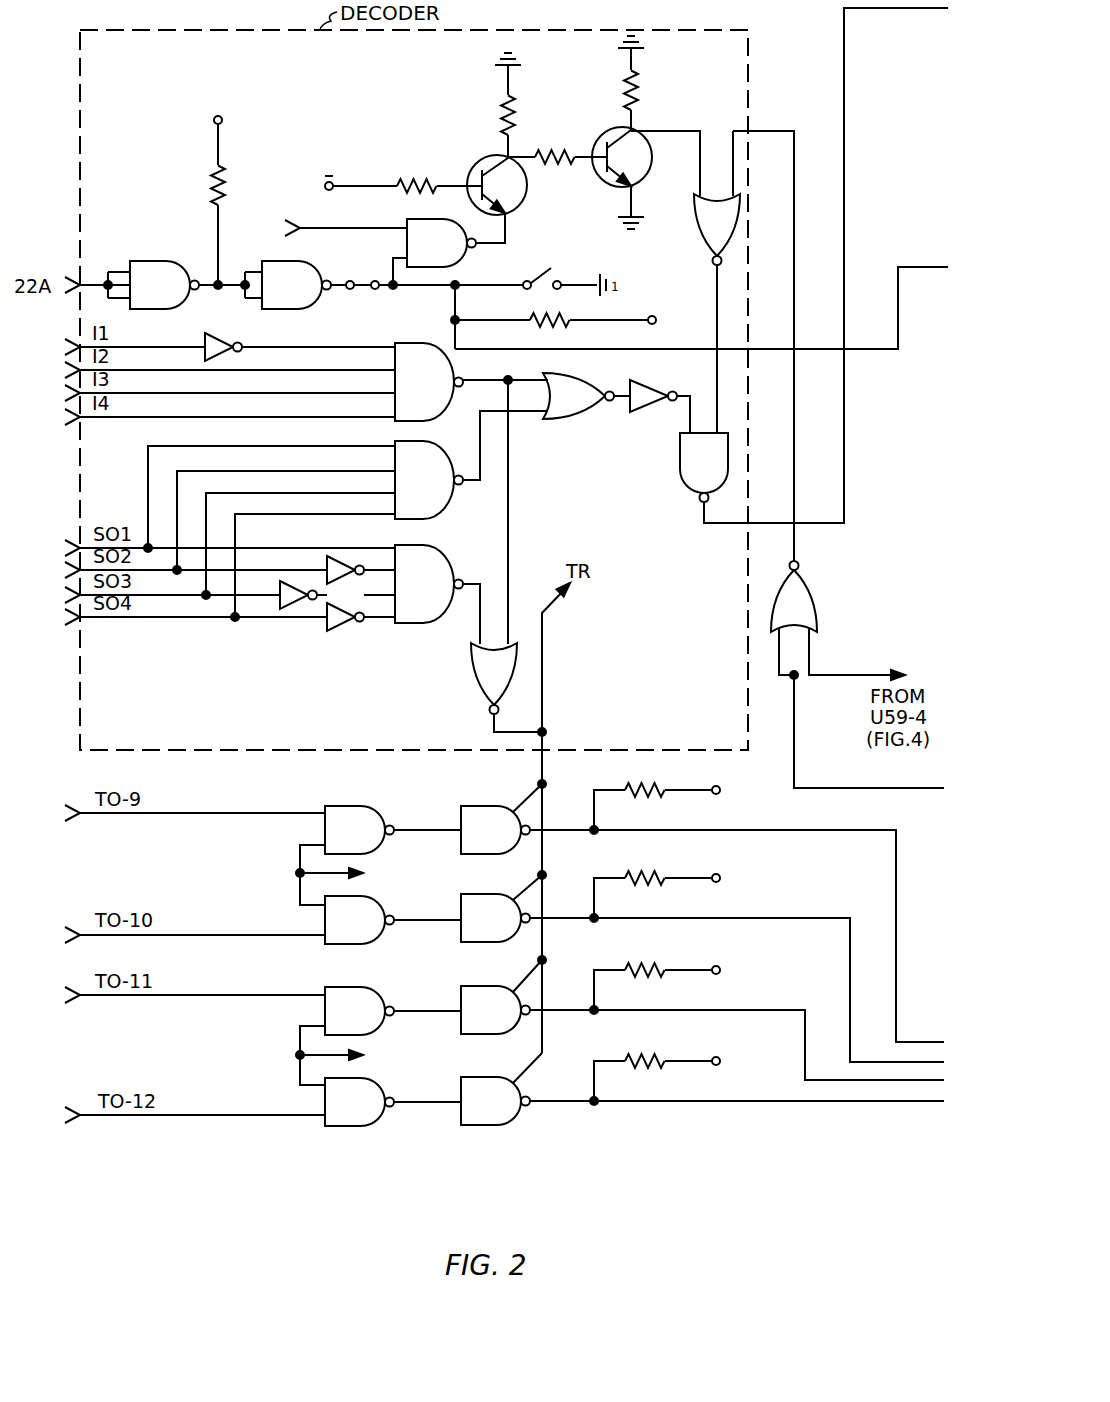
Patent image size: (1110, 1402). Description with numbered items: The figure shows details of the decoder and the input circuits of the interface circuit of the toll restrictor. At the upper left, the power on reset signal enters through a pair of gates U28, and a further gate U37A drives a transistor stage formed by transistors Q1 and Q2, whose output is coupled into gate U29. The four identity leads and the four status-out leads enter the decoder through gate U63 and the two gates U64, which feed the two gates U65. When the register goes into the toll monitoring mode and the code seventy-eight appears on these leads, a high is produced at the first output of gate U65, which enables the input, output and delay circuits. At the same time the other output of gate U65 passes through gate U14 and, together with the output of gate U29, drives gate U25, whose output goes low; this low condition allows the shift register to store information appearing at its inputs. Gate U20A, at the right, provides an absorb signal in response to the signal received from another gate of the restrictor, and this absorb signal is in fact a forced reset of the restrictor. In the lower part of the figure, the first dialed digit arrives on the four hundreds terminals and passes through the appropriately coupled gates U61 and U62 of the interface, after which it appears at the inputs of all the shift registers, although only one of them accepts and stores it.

The gate U28 is at (238, 283).
The NAND gate U37A is at (395, 249).
The transistor Q1 is at (437, 137).
The transistor Q2 is at (634, 132).
The gate U29 is at (719, 303).
The four-input NAND gate U63 is at (471, 382).
The four-input NAND gates U64 is at (471, 527).
The gate U65 is at (543, 545).
The gate U14 is at (652, 389).
The gate U25 is at (814, 265).
The gate U20A is at (818, 604).
The gate U61 is at (378, 966).
The gate U62 is at (702, 954).